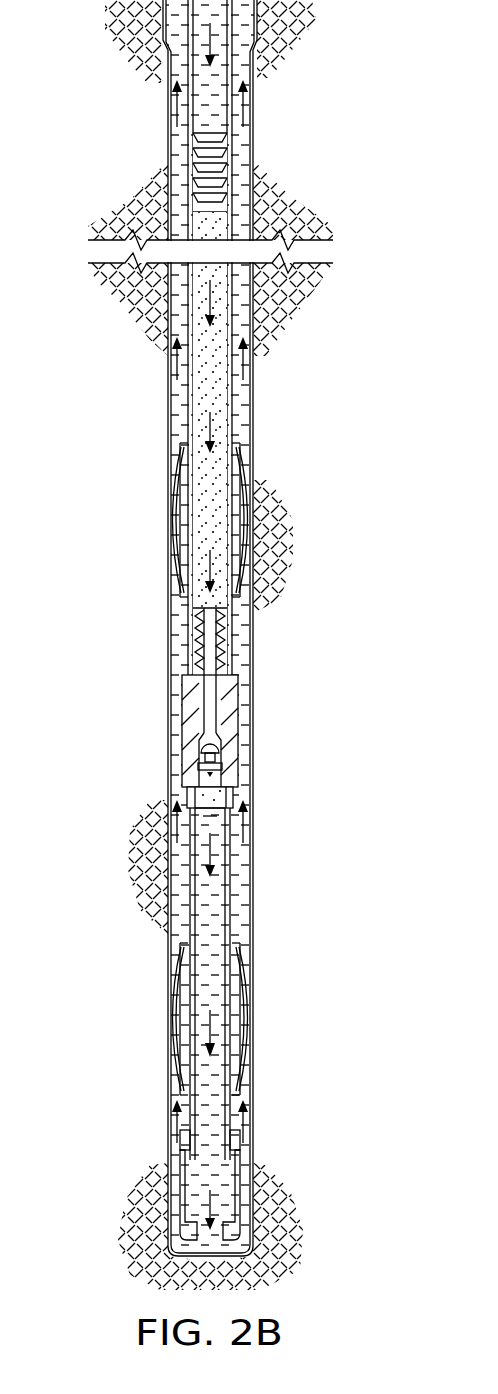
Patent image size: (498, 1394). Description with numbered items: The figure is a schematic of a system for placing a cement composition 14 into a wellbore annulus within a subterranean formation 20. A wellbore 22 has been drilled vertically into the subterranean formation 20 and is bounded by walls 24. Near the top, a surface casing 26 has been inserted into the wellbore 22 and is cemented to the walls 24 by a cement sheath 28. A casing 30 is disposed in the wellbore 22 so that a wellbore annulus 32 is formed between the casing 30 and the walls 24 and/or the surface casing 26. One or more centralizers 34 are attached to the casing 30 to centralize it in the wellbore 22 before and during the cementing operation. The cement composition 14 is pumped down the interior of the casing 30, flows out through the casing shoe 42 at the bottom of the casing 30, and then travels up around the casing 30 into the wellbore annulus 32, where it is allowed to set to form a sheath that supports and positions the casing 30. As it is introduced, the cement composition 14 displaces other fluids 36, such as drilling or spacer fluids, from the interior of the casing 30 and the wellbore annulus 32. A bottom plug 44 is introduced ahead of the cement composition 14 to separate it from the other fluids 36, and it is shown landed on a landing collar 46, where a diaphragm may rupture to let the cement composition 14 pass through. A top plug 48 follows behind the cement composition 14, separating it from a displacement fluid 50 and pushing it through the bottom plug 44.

The cement composition 14 is at (203, 300).
The subterranean formation 20 is at (95, 557).
The wellbore 22 is at (260, 412).
The walls 24 is at (248, 147).
The surface casing 26 is at (257, 40).
The cement sheath 28 is at (158, 40).
The casing 30 is at (222, 296).
The wellbore annulus 32 is at (172, 417).
The centralizers 34 is at (170, 1018).
The other fluids 36 is at (213, 850).
The casing shoe 42 is at (250, 1188).
The bottom plug 44 is at (225, 660).
The landing collar 46 is at (190, 687).
The top plug 48 is at (197, 158).
The displacement fluid 50 is at (197, 42).